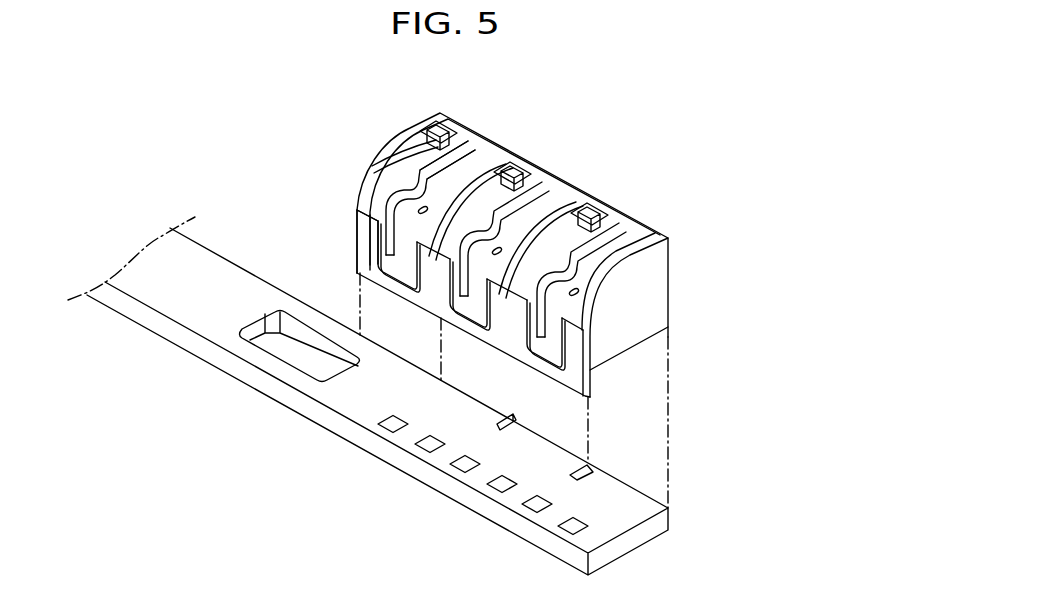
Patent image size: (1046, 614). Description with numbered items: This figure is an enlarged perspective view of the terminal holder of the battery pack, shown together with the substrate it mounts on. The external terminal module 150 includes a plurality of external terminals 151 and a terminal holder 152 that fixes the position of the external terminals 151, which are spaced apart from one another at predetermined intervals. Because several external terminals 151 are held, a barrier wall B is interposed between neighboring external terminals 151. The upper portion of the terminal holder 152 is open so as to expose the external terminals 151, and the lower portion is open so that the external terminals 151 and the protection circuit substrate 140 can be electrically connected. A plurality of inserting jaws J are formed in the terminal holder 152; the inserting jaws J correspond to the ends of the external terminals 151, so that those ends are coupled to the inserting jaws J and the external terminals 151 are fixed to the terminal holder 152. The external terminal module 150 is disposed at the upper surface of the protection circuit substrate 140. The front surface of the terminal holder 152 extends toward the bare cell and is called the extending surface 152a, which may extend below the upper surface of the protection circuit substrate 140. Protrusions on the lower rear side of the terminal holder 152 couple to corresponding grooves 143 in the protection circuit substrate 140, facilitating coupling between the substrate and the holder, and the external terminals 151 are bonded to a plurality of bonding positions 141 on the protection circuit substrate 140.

The protection circuit substrate 140 is at (663, 522).
The bonding positions 141 is at (465, 463).
The grooves 143 is at (592, 468).
The external terminal module 150 is at (521, 232).
The external terminals 151 is at (602, 213).
The terminal holder 152 is at (660, 288).
The extending surface 152a is at (362, 242).
The barrier wall B is at (487, 153).
The inserting jaws J is at (567, 210).